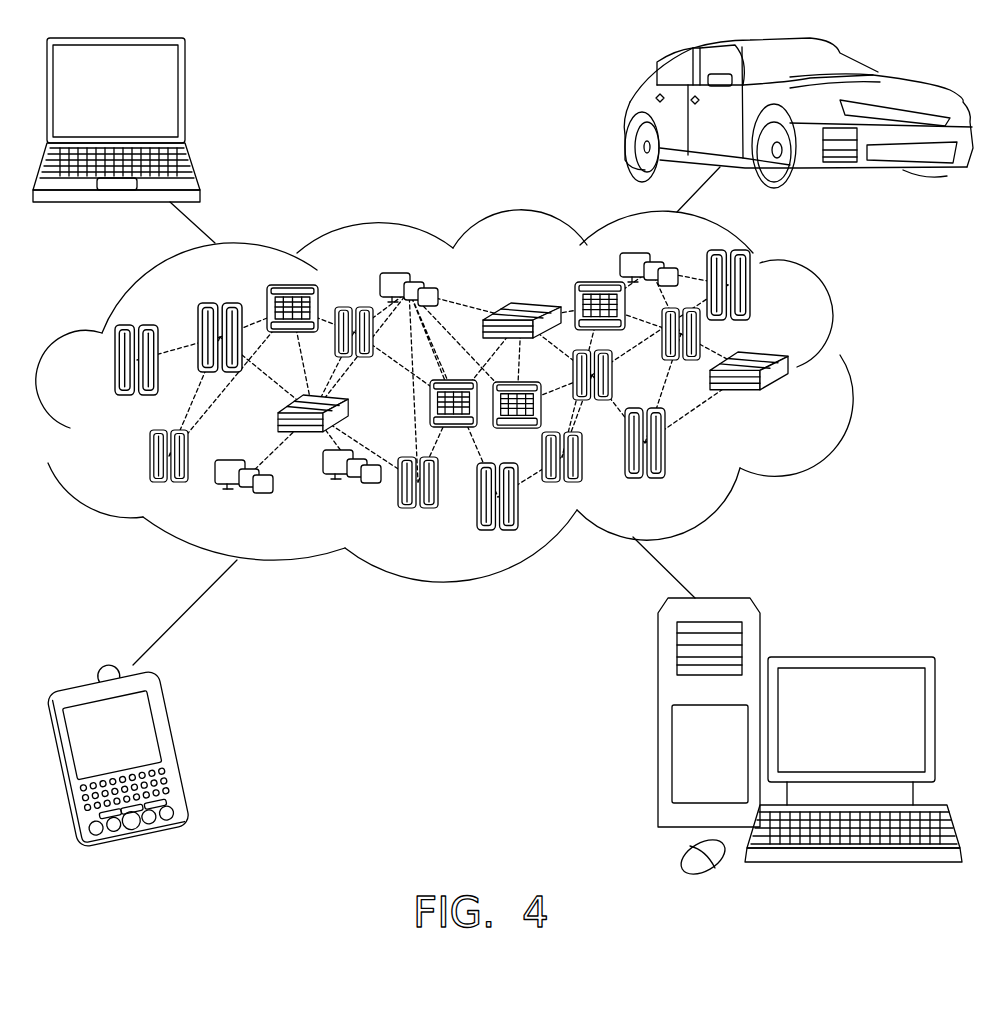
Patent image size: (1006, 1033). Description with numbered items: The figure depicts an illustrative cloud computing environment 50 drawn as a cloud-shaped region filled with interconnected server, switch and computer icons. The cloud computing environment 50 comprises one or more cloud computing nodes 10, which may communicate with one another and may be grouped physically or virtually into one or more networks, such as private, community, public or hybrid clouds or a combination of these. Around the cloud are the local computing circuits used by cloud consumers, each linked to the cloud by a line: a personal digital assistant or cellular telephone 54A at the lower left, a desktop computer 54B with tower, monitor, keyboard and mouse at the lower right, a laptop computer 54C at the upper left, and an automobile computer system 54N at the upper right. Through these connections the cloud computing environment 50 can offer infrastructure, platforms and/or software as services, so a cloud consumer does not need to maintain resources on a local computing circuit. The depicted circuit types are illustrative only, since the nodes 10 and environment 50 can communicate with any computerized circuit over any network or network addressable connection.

The laptop computer 54C is at (185, 100).
The automobile computer system 54N is at (630, 116).
The cloud computing environment 50 is at (848, 372).
The cloud computing node 10 is at (796, 401).
The personal digital assistant or cellular telephone 54A is at (177, 750).
The desktop computer 54B is at (847, 655).